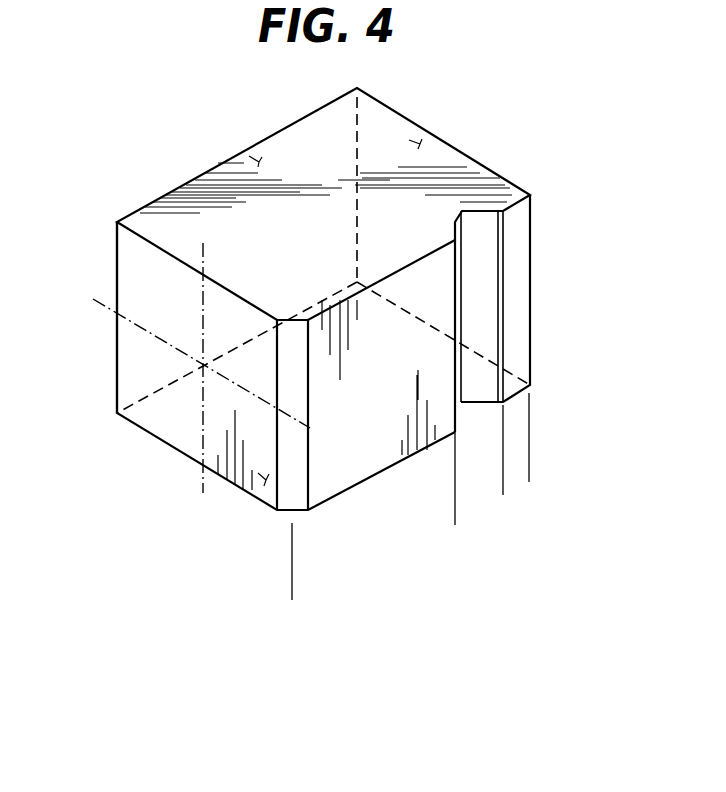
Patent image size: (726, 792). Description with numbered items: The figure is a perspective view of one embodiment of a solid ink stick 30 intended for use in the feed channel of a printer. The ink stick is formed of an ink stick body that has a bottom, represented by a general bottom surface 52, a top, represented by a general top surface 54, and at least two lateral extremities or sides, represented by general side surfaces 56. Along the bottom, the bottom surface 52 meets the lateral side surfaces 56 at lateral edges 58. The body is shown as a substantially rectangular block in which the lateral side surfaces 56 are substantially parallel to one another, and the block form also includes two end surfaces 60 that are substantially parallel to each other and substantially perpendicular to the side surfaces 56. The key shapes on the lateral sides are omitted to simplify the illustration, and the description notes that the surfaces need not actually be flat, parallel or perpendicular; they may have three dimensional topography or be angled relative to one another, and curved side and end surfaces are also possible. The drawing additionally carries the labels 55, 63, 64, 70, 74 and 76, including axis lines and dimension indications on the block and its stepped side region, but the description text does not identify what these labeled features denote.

The solid ink stick 30 is at (494, 108).
The bottom surface 52 is at (260, 489).
The top surface 54 is at (331, 128).
The bevel edge face 55 is at (290, 498).
The side surfaces 56 is at (258, 160).
The lateral edges 58 is at (357, 485).
The end surfaces 60 is at (420, 139).
The vertical axis 63 is at (202, 483).
The longitudinal axis 64 is at (95, 300).
The slot 70 is at (482, 236).
The width dimension 74 is at (452, 515).
The flange thickness dimension 76 is at (482, 494).